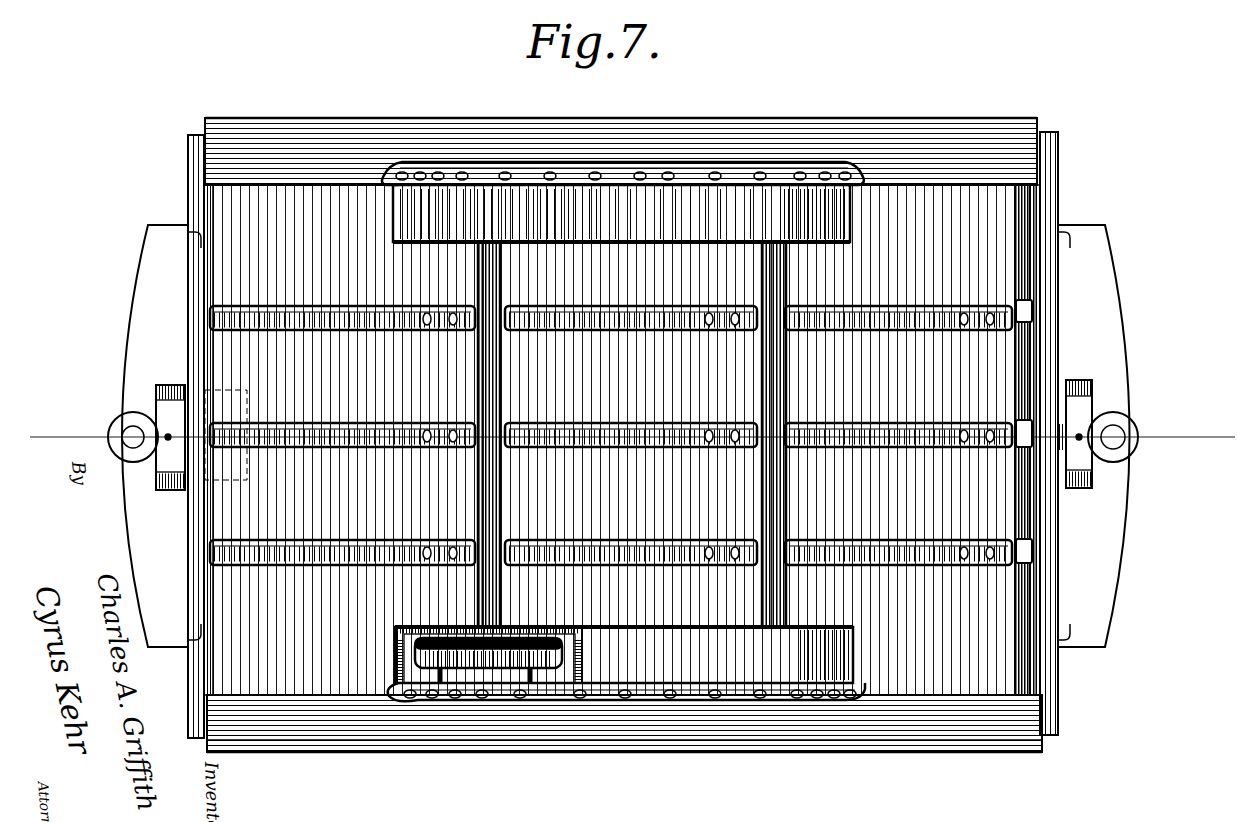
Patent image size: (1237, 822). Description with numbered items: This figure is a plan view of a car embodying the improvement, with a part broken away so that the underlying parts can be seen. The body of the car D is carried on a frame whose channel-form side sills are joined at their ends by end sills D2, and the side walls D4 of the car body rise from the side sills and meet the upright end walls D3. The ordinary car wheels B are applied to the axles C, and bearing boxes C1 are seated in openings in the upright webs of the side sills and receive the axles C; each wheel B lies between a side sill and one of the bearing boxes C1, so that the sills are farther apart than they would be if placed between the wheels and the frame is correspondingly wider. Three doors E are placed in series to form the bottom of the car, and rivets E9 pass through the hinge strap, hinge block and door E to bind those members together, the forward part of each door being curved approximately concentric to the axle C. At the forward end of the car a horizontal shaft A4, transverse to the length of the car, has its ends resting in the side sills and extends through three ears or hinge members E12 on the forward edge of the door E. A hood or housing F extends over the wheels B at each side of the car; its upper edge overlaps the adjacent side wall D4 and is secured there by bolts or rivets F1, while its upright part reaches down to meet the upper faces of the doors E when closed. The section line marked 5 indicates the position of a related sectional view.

The body of the car D is at (623, 421).
The end sills D2 is at (125, 340).
The upright end walls D3 is at (198, 188).
The side walls D4 is at (893, 150).
The doors E is at (611, 435).
The rivets E9 is at (453, 312).
The ears or hinge members E12 is at (1032, 306).
The hood or housing F is at (623, 431).
The bolts or rivets F1 is at (716, 172).
The car wheels B is at (432, 696).
The axles C is at (497, 630).
The bearing boxes C1 is at (480, 696).
The shaft A4 is at (1036, 597).
The section line 5 is at (632, 437).